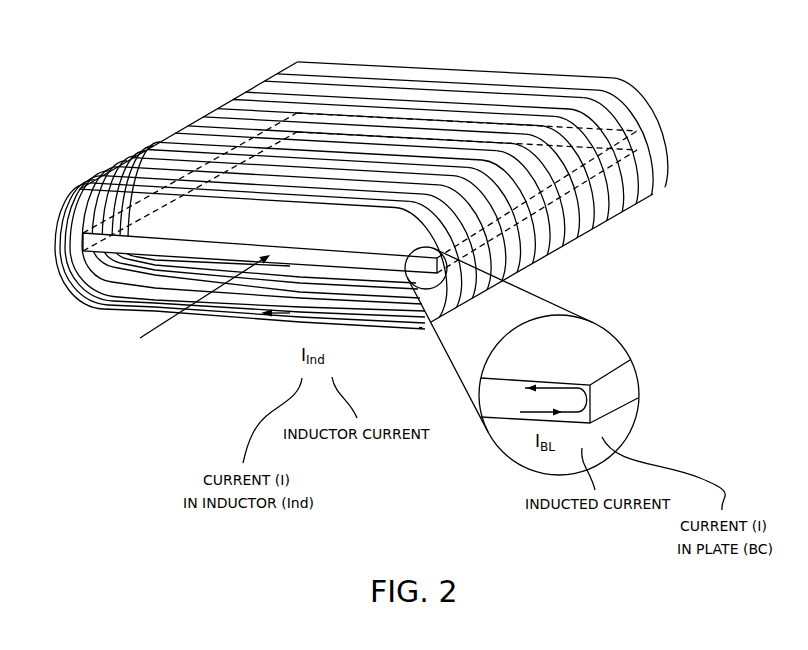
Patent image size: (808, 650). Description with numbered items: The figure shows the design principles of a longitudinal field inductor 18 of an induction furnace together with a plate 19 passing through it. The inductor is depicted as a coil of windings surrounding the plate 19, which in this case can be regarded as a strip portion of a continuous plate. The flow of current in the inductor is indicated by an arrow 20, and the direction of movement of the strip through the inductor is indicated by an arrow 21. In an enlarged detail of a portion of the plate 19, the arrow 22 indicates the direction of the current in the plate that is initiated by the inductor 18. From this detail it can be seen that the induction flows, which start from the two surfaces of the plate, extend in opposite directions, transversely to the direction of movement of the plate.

The longitudinal field inductor 18 is at (170, 103).
The plate 19 is at (133, 228).
The arrow 20 is at (263, 319).
The arrow 21 is at (171, 320).
The arrow 22 is at (520, 414).